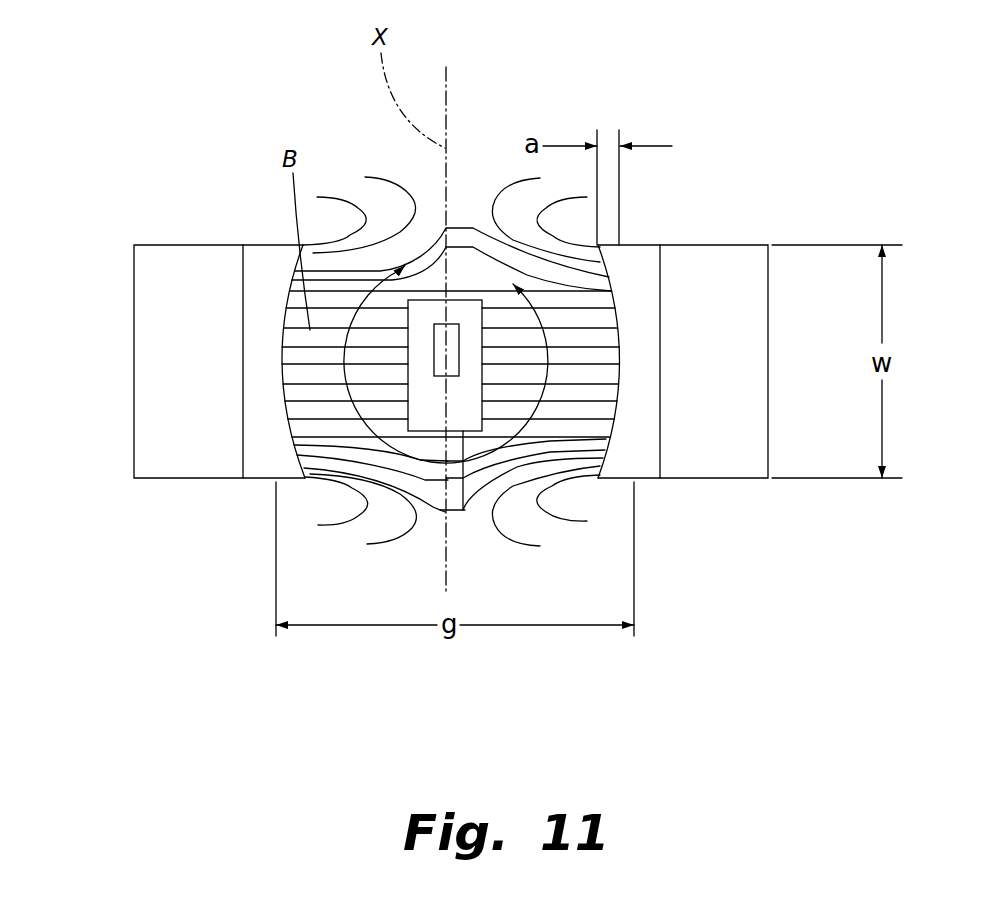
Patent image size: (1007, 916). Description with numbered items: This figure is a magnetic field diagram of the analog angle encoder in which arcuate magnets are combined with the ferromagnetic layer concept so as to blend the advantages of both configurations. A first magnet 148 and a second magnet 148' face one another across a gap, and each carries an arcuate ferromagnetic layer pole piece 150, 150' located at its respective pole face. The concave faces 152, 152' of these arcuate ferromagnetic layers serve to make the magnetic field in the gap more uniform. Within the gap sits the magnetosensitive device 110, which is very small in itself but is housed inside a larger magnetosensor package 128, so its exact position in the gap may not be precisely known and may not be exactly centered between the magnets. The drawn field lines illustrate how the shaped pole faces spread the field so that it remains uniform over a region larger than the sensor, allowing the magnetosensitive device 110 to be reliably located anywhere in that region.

The magnetosensitive device 110 is at (453, 322).
The magnetosensor package 128 is at (463, 520).
The first magnet 148 is at (145, 389).
The second magnet 148' is at (736, 396).
The arcuate ferromagnetic layer pole piece 150 is at (222, 409).
The arcuate ferromagnetic layer pole piece 150' is at (658, 319).
The face of the arcuate ferromagnetic layer 152 is at (174, 361).
The face of the arcuate ferromagnetic layer 152' is at (719, 361).